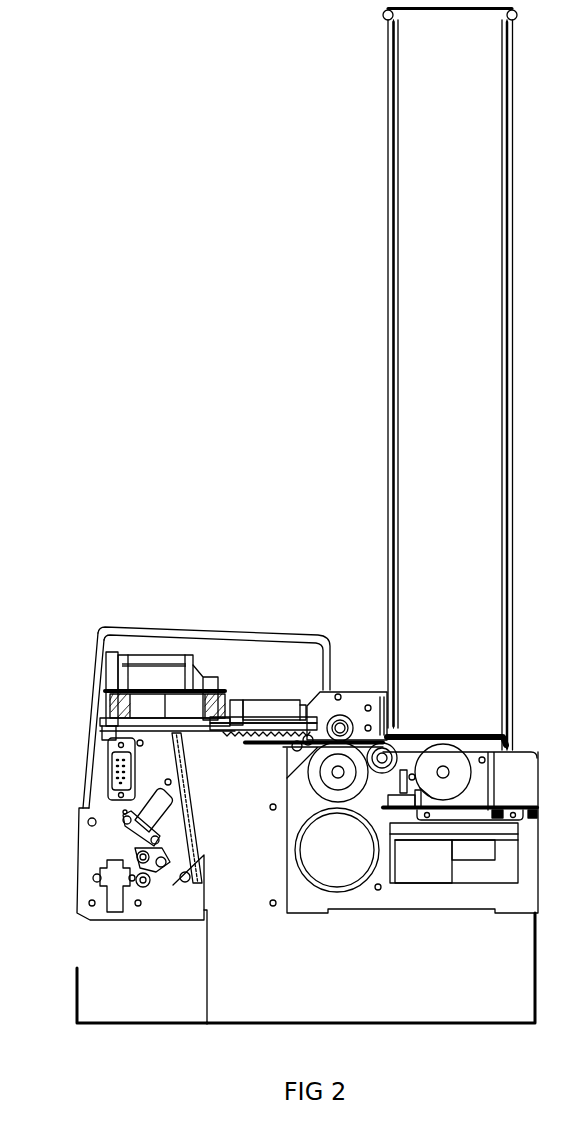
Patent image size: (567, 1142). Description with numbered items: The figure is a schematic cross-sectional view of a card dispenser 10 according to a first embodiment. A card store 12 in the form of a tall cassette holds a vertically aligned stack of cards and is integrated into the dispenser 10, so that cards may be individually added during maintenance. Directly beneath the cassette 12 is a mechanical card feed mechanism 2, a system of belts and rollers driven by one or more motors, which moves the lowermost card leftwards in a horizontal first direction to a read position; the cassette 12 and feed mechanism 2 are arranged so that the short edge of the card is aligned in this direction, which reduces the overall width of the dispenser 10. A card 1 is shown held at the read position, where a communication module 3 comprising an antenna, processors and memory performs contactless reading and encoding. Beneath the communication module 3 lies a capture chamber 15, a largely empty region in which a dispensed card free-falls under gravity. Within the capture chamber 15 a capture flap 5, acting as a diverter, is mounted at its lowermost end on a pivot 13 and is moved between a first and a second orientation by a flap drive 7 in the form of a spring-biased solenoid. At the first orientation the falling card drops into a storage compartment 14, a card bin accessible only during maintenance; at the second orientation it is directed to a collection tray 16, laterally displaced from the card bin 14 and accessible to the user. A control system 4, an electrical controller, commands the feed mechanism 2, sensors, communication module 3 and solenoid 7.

The card 1 is at (257, 746).
The card feed mechanism 2 is at (450, 931).
The communication module 3 is at (258, 700).
The control system 4 is at (143, 677).
The capture flap 5 is at (206, 811).
The flap drive 7 is at (106, 842).
The card dispenser 10 is at (183, 481).
The card store 12 is at (480, 230).
The pivot 13 is at (146, 888).
The storage compartment 14 is at (353, 986).
The capture chamber 15 is at (226, 851).
The collection tray 16 is at (130, 988).